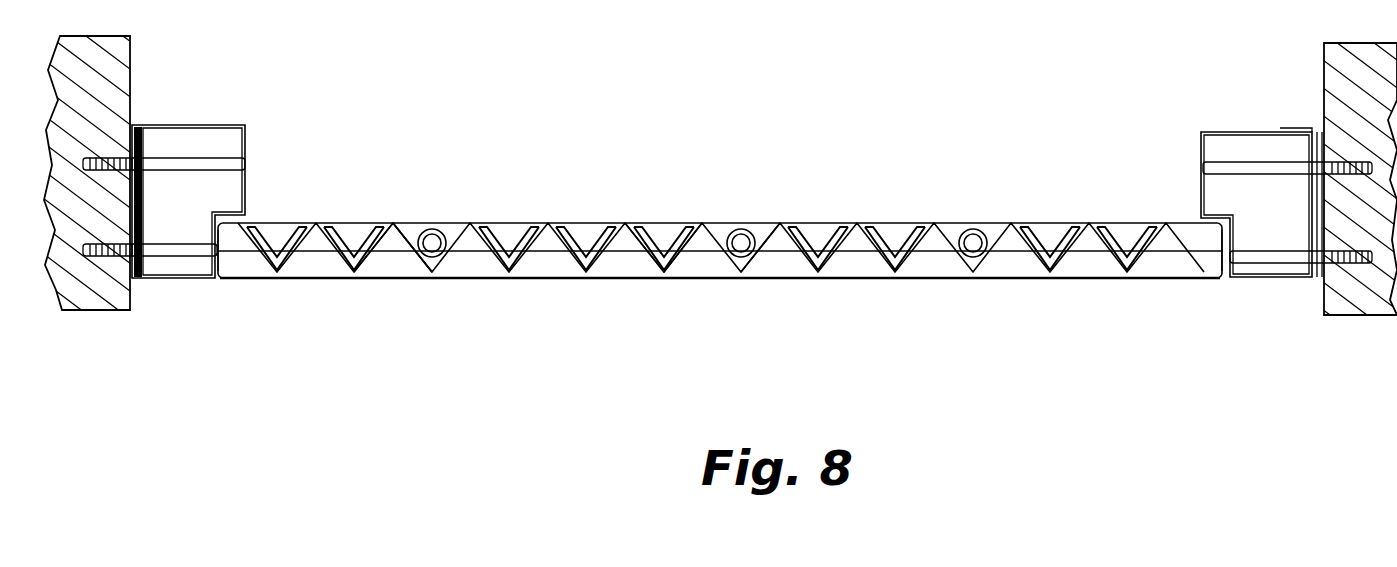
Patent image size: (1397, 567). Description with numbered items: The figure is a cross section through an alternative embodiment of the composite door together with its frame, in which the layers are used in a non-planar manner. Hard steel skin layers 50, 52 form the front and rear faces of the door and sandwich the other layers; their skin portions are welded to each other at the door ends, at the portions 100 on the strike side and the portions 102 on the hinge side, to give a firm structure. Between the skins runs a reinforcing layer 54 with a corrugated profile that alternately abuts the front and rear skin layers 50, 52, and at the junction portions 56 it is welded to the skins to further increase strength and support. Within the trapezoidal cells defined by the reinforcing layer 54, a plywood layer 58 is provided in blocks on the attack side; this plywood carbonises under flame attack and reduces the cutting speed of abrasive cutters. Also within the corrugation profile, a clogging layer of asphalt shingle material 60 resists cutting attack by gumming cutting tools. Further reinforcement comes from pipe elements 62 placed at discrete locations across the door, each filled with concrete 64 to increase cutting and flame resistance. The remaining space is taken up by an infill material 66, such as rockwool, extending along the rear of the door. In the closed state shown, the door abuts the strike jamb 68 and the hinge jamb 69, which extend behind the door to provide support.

The hard skin layer 50 is at (407, 223).
The hard skin layer 52 is at (430, 262).
The reinforcing layer 54 is at (520, 226).
The junction portions 56 is at (395, 223).
The plywood layer 58 is at (316, 263).
The asphalt shingle material 60 is at (286, 240).
The pipe elements 62 is at (760, 228).
The concrete 64 is at (431, 242).
The infill material 66 is at (578, 237).
The strike jamb 68 is at (1236, 110).
The hinge jamb 69 is at (203, 110).
The portions on the strike side 100 is at (1220, 252).
The portions on the hinge side 102 is at (221, 250).